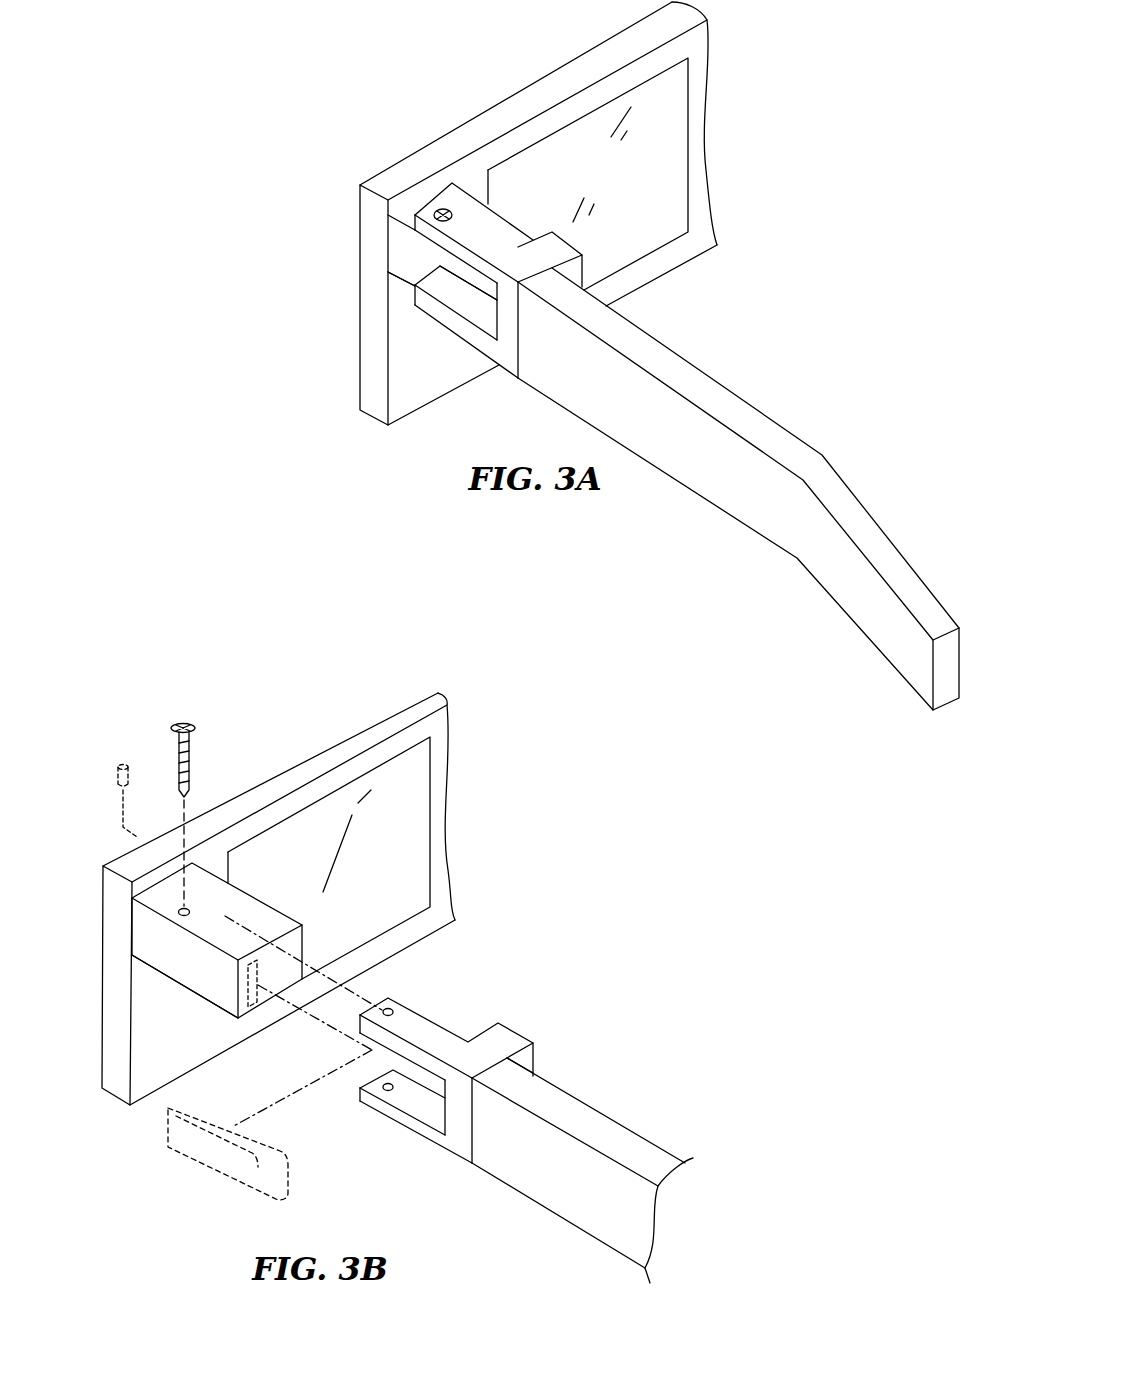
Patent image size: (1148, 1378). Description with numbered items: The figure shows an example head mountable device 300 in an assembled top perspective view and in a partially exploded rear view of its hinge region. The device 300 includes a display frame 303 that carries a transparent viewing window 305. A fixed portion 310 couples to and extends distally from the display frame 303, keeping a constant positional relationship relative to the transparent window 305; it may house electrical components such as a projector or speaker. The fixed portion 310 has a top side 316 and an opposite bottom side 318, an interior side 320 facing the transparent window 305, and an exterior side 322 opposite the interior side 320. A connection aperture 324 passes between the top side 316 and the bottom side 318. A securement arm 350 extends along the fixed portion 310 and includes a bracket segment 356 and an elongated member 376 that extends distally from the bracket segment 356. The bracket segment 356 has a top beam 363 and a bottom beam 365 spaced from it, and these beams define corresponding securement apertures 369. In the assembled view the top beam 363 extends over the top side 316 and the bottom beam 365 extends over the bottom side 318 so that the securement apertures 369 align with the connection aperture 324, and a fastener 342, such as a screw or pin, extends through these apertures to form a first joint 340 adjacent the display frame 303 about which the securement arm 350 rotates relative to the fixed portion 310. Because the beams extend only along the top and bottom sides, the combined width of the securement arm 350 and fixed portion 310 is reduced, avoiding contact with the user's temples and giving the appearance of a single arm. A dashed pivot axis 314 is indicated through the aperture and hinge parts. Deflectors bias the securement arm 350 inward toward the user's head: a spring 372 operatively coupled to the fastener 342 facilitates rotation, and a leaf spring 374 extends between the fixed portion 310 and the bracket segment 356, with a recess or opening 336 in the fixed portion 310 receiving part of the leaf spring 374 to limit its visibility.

In FIG. 3A, the head mountable device 300 is at (383, 98).
In FIG. 3B, the head mountable device 300 is at (258, 697).
In FIG. 3A, the display frame 303 is at (676, 16).
In FIG. 3B, the display frame 303 is at (417, 699).
In FIG. 3A, the transparent viewing windows 305 is at (677, 138).
In FIG. 3B, the transparent viewing windows 305 is at (420, 822).
In FIG. 3A, the fixed portion 310 is at (403, 238).
In FIG. 3B, the fixed portion 310 is at (232, 905).
In FIG. 3B, the hinge axis 314 is at (300, 944).
In FIG. 3A, the top side 316 is at (507, 225).
In FIG. 3B, the top side 316 is at (281, 888).
In FIG. 3A, the bottom side 318 is at (401, 283).
In FIG. 3B, the bottom side 318 is at (157, 975).
In FIG. 3A, the interior side 320 is at (452, 183).
In FIG. 3A, the exterior side 322 is at (462, 305).
In FIG. 3B, the connection aperture 324 is at (177, 911).
In FIG. 3B, the recess or opening 336 is at (243, 984).
In FIG. 3A, the first joint 340 is at (440, 210).
In FIG. 3B, the fastener 342 is at (178, 722).
In FIG. 3A, the securement arm 350 is at (708, 508).
In FIG. 3A, the bracket segment 356 is at (565, 240).
In FIG. 3B, the bracket segment 356 is at (512, 1045).
In FIG. 3A, the top beam 363 is at (480, 243).
In FIG. 3B, the top beam 363 is at (438, 1032).
In FIG. 3A, the bottom beam 365 is at (477, 335).
In FIG. 3B, the bottom beam 365 is at (416, 1103).
In FIG. 3B, the securement aperture 369 is at (391, 1008).
In FIG. 3B, the spring 372 is at (117, 775).
In FIG. 3B, the leaf spring 374 is at (207, 1167).
In FIG. 3A, the elongated member 376 is at (739, 410).
In FIG. 3B, the elongated member 376 is at (624, 1148).